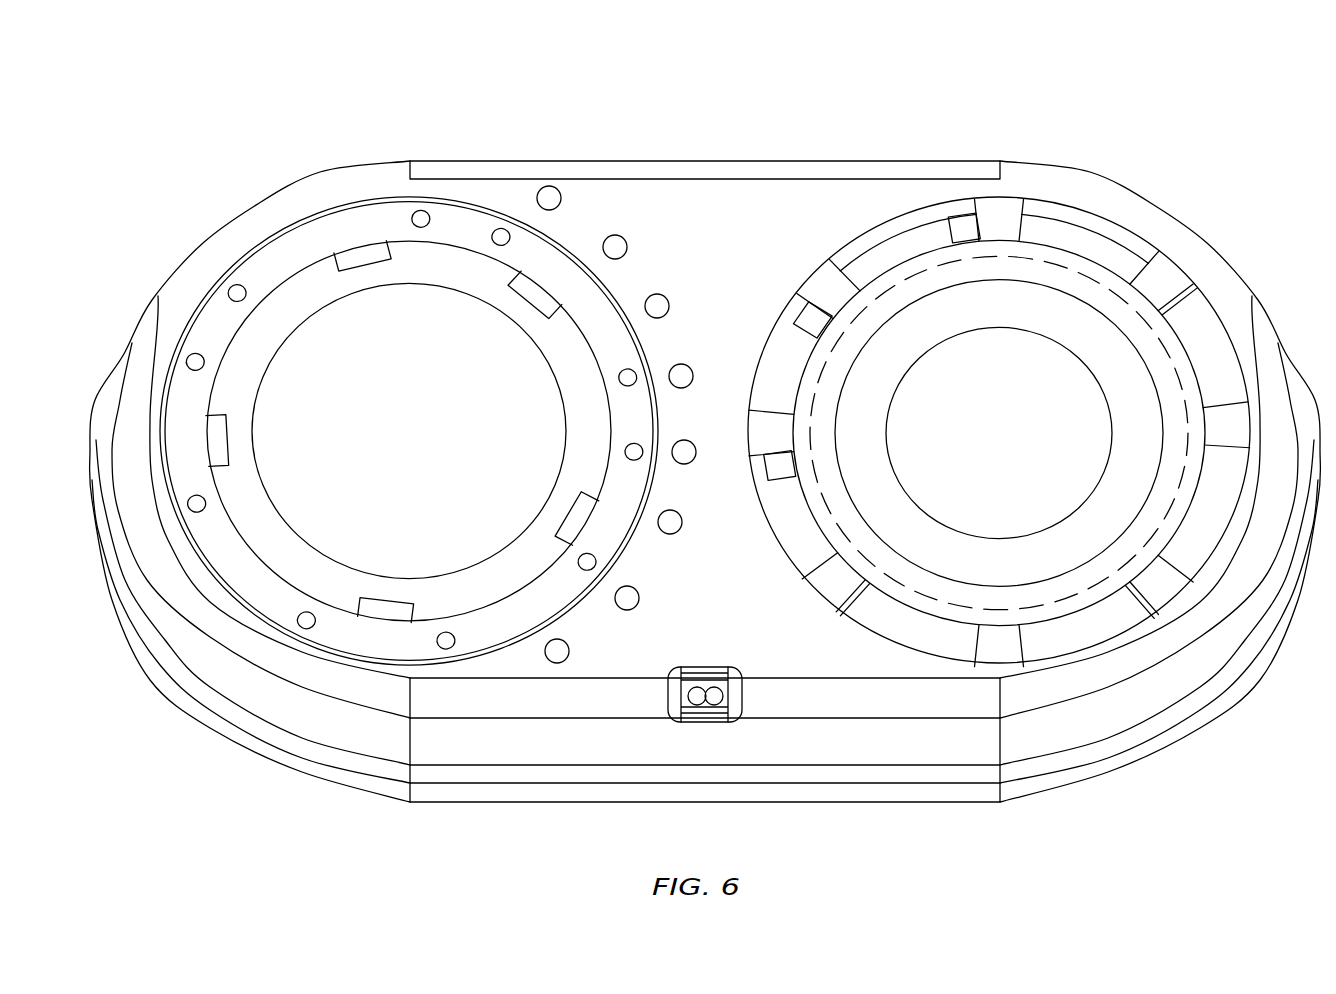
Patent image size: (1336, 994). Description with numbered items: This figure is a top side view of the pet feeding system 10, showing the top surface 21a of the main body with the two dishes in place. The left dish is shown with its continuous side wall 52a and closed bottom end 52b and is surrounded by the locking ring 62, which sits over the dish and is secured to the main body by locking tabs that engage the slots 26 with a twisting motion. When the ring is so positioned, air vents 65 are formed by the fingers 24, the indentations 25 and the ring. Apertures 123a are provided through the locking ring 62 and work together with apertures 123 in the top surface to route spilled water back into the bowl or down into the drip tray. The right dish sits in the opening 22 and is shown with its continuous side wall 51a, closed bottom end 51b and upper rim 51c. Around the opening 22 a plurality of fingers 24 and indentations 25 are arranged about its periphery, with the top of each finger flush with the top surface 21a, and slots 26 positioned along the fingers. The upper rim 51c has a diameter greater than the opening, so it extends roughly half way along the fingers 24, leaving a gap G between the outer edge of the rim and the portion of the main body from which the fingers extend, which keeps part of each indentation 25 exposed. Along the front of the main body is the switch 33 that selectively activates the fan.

The system 10 is at (381, 126).
The top surface 21a is at (732, 283).
The opening 22 is at (905, 600).
The fingers 24 is at (1000, 200).
The indentations 25 is at (900, 240).
The slots 26 is at (960, 216).
The switch 33 is at (706, 690).
The continuous side wall 51a is at (1025, 313).
The closed bottom end 51b is at (1025, 447).
The upper rim 51c is at (1048, 250).
The continuous side wall 52a is at (278, 330).
The closed bottom end 52b is at (435, 443).
The ring 62 is at (276, 266).
The air vents 65 is at (356, 249).
The apertures 123 is at (657, 302).
The apertures 123a is at (500, 234).
The gap G is at (842, 489).